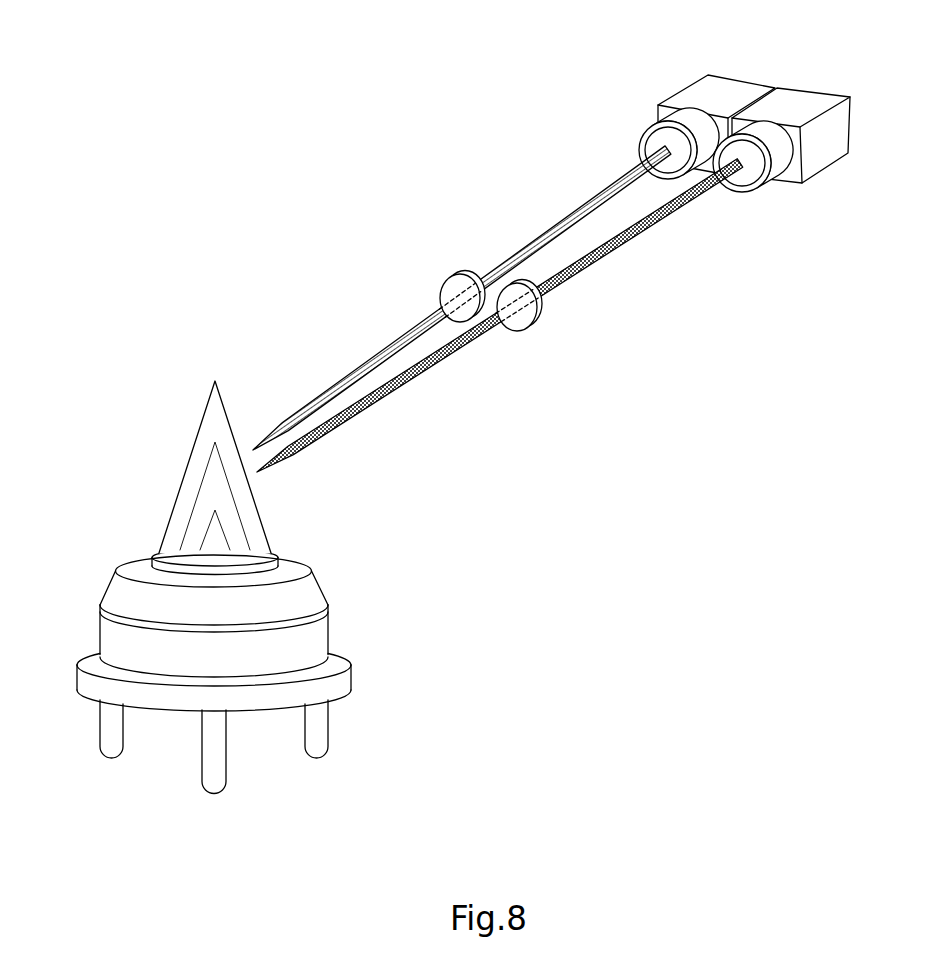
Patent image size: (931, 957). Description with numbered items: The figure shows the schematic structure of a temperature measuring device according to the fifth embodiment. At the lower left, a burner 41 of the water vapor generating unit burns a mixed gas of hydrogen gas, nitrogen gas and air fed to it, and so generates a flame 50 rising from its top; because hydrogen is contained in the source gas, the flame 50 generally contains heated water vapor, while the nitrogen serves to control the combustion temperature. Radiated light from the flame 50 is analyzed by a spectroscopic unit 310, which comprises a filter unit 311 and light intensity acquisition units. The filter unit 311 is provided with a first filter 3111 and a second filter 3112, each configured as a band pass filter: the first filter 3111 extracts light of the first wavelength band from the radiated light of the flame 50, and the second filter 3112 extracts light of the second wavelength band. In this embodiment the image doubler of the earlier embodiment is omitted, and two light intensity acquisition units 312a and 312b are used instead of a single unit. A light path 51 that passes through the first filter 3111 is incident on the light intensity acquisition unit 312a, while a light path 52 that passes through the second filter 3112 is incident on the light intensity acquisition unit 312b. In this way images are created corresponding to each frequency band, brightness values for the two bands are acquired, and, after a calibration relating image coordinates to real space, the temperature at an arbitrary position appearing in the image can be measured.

The burner 41 is at (110, 583).
The flame 50 is at (187, 462).
The light path 51 is at (620, 247).
The light path 52 is at (598, 200).
The spectroscopic unit 310 is at (454, 227).
The filter unit 311 is at (454, 227).
The first filter 3111 is at (523, 283).
The second filter 3112 is at (450, 277).
The light intensity acquisition unit 312a is at (802, 103).
The light intensity acquisition unit 312b is at (727, 90).